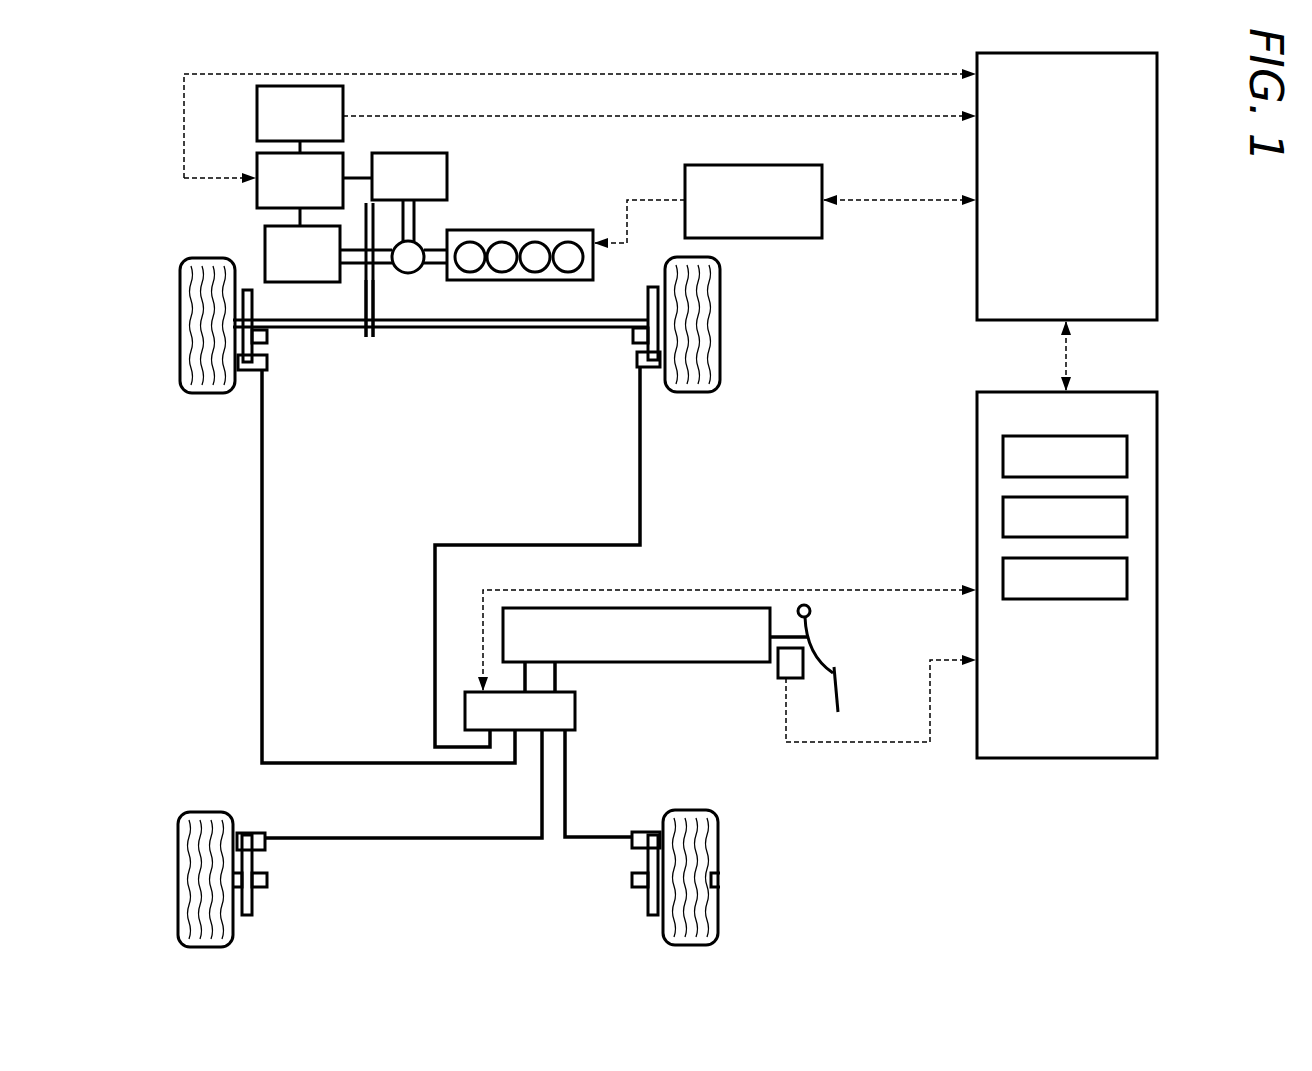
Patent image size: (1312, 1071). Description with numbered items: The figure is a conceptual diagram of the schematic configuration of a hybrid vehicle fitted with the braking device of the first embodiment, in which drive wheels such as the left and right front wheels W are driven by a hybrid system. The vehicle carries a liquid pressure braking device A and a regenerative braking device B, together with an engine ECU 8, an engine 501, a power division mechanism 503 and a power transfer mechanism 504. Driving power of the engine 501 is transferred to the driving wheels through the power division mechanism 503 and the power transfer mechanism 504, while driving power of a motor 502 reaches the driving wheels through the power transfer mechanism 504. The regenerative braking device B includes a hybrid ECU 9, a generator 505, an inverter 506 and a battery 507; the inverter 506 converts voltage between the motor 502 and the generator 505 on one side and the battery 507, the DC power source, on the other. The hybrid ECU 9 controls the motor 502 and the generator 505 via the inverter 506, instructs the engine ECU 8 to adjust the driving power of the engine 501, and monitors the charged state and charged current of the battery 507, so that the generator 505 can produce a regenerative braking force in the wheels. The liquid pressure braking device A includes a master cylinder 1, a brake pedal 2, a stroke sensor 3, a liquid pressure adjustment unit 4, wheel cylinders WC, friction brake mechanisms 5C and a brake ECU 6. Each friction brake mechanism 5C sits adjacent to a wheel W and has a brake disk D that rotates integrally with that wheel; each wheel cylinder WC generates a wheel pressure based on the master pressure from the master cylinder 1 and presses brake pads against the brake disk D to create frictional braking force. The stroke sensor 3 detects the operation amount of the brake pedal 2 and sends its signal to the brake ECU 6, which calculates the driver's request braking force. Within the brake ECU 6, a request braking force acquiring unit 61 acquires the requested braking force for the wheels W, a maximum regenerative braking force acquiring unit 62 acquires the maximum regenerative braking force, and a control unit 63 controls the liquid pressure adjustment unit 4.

The master cylinder 1 is at (672, 662).
The brake pedal 2 is at (812, 657).
The stroke sensor 3 is at (795, 678).
The liquid pressure adjustment unit 4 is at (575, 715).
The friction brake mechanism 5C is at (243, 366).
The brake ECU 6 is at (1157, 555).
The request braking force acquiring unit 61 is at (1003, 458).
The maximum regenerative braking force acquiring unit 62 is at (1003, 518).
The control unit 63 is at (1003, 576).
The engine ECU 8 is at (748, 165).
The hybrid ECU 9 is at (1157, 195).
The engine 501 is at (540, 230).
The motor 502 is at (330, 282).
The power division mechanism 503 is at (410, 260).
The power transfer mechanism 504 is at (388, 294).
The generator 505 is at (447, 160).
The inverter 506 is at (257, 166).
The battery 507 is at (257, 118).
The liquid pressure braking device A is at (782, 784).
The regenerative braking device B is at (228, 195).
The brake disk D is at (252, 303).
The wheel W is at (180, 325).
The wheel cylinder WC is at (266, 362).